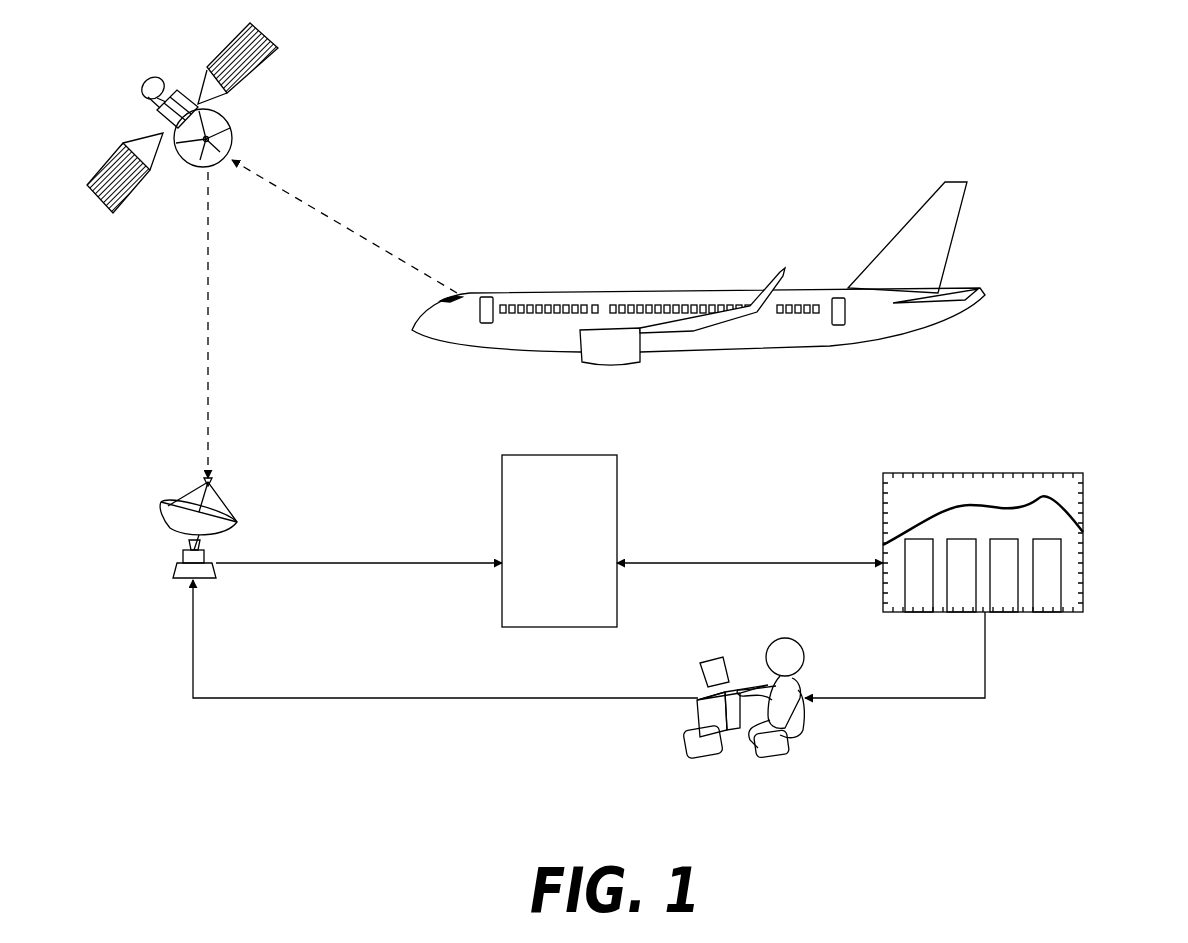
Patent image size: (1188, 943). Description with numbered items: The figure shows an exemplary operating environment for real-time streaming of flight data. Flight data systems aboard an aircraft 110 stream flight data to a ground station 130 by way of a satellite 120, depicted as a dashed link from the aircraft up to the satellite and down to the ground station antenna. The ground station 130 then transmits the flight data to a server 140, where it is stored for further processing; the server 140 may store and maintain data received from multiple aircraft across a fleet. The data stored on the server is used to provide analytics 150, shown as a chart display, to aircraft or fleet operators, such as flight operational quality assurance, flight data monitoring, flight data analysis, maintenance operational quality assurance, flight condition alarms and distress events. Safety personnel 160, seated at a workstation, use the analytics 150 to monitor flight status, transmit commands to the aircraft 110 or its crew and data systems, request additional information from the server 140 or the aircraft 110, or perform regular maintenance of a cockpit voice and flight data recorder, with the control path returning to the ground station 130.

The aircraft 110 is at (952, 253).
The satellite 120 is at (150, 90).
The ground station 130 is at (175, 572).
The server 140 is at (617, 478).
The analytics 150 is at (1083, 518).
The safety personnel 160 is at (790, 750).